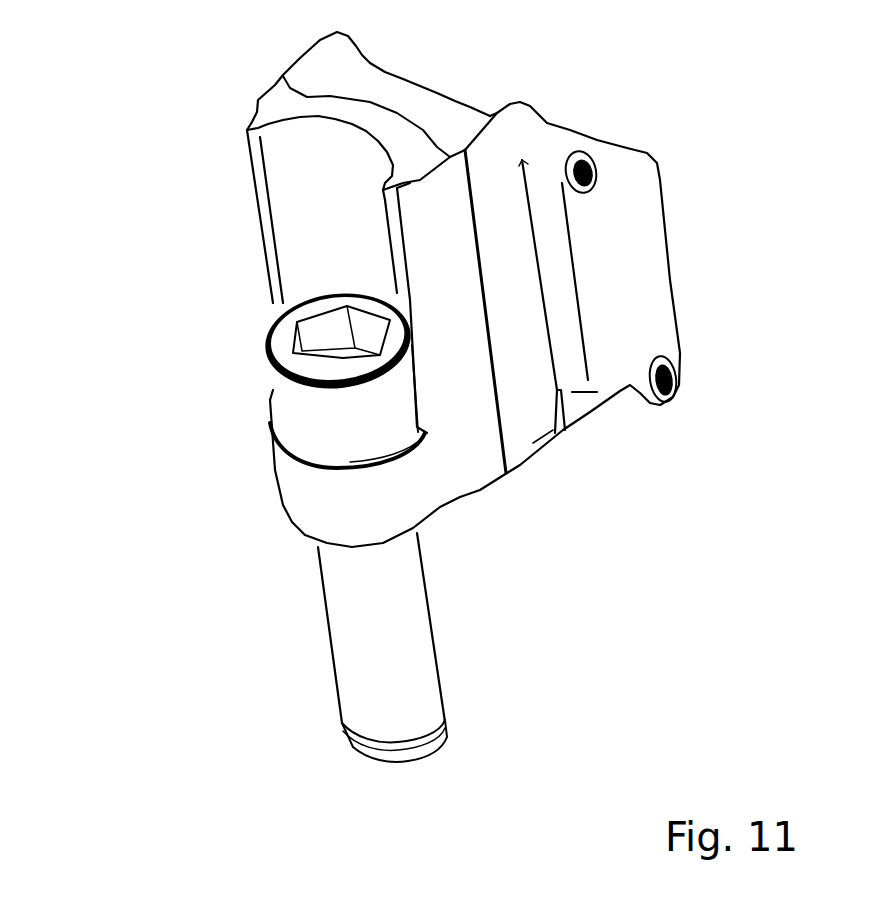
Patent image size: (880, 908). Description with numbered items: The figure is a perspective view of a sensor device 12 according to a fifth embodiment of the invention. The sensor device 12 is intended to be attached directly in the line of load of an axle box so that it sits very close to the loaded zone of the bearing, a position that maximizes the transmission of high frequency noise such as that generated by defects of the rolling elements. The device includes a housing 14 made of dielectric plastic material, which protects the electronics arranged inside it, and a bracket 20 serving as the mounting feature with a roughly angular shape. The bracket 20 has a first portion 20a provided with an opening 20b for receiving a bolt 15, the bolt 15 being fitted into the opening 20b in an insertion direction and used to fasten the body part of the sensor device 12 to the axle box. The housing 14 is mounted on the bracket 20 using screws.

The sensor device 12 is at (238, 450).
The housing 14 is at (655, 245).
The bolt 15 is at (393, 643).
The bracket 20 is at (475, 458).
The first portion 20a is at (313, 518).
The opening 20b is at (437, 192).